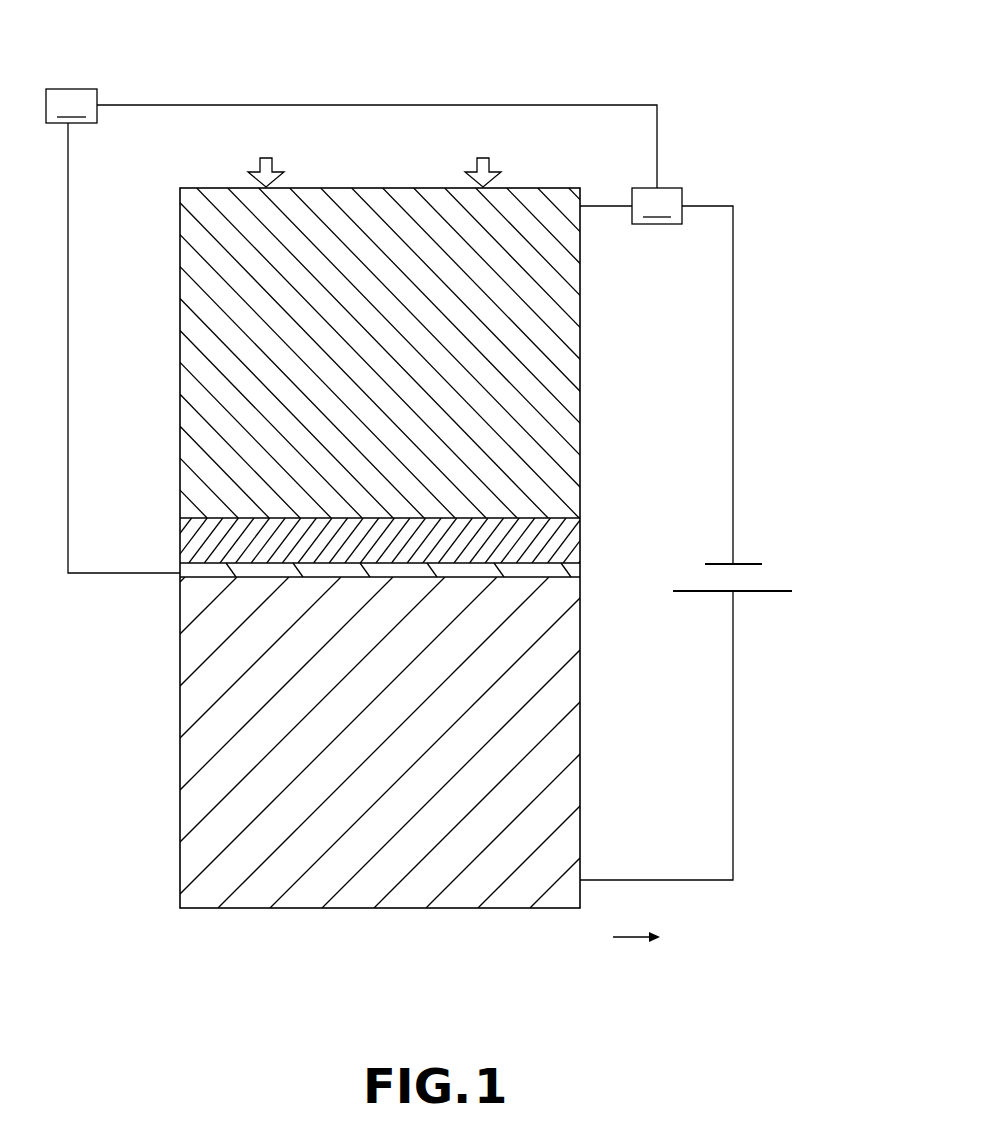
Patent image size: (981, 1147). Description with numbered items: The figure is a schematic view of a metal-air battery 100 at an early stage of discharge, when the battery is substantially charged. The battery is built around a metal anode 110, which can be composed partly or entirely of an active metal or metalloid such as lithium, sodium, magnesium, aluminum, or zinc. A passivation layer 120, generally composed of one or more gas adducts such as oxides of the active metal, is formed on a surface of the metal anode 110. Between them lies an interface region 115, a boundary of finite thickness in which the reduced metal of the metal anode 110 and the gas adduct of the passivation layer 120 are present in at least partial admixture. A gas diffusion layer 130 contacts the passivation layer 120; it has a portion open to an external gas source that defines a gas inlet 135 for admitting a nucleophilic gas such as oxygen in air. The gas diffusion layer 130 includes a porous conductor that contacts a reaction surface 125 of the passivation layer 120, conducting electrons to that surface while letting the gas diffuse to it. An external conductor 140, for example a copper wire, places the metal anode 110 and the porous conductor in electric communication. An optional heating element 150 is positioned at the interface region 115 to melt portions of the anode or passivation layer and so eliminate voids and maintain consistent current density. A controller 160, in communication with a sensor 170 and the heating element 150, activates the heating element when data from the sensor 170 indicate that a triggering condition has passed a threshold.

The metal-air battery 100 is at (692, 112).
The metal anode 110 is at (207, 797).
The interface region 115 is at (582, 565).
The passivation layer 120 is at (590, 547).
The reaction surface 125 is at (527, 518).
The gas diffusion layer 130 is at (588, 308).
The gas inlet 135 is at (374, 163).
The external conductor 140 is at (733, 820).
The heating element 150 is at (245, 584).
The controller 160 is at (351, 331).
The sensor 170 is at (631, 206).